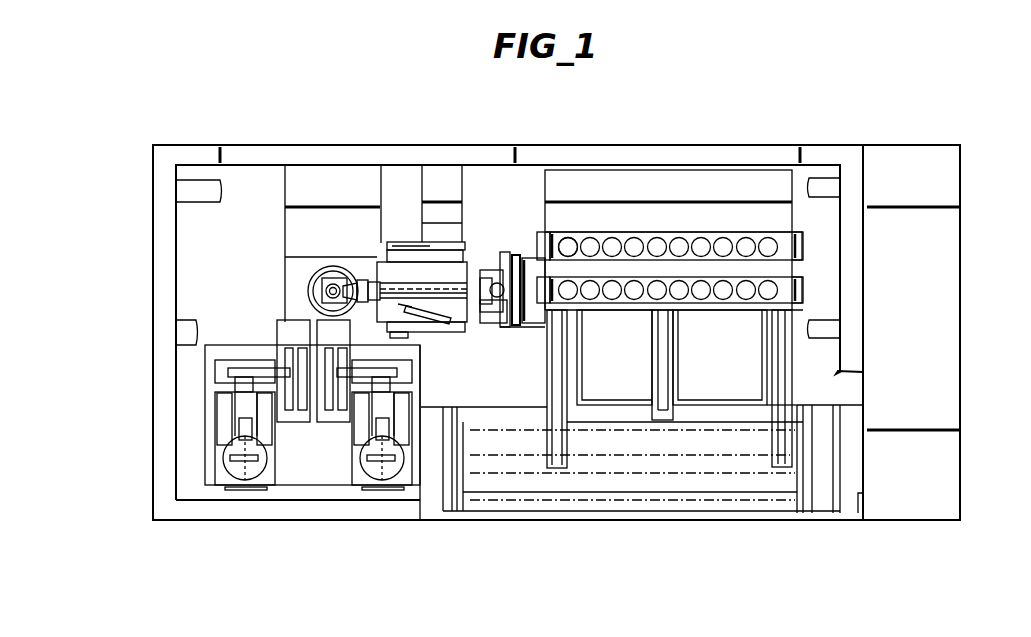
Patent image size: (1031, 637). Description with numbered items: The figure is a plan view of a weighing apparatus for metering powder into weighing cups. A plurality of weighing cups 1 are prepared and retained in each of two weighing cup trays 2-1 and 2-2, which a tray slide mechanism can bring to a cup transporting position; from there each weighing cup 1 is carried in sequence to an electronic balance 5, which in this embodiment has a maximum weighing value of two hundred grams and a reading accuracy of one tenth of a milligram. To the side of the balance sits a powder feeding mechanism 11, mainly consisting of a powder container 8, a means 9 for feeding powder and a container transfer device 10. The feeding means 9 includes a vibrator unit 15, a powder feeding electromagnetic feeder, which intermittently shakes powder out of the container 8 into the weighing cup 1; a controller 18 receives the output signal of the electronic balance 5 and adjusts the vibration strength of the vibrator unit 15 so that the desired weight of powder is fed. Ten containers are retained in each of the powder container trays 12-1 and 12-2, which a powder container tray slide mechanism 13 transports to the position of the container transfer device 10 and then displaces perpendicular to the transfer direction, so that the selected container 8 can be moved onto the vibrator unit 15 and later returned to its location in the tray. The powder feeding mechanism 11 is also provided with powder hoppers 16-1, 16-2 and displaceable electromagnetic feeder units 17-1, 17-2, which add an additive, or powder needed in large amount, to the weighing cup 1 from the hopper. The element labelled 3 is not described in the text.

The weighing cup 1 is at (570, 242).
The weighing cup tray 2-1 is at (692, 240).
The weighing cup tray 2-2 is at (803, 287).
The magazine support 3 is at (793, 307).
The electronic balance 5 is at (304, 262).
The powder container 8 is at (370, 278).
The means for feeding powder 9 is at (423, 288).
The container transfer device 10 is at (485, 267).
The powder feeding mechanism 11 is at (478, 258).
The powder container tray 12-1 is at (713, 447).
The powder container tray 12-2 is at (635, 483).
The powder container tray slide mechanism 13 is at (590, 507).
The vibrator unit 15 is at (392, 267).
The powder hopper 16-1 is at (233, 467).
The powder hopper 16-2 is at (372, 467).
The electromagnetic feeder unit 17-1 is at (242, 400).
The electromagnetic feeder unit 17-2 is at (380, 402).
The controller 18 is at (947, 169).